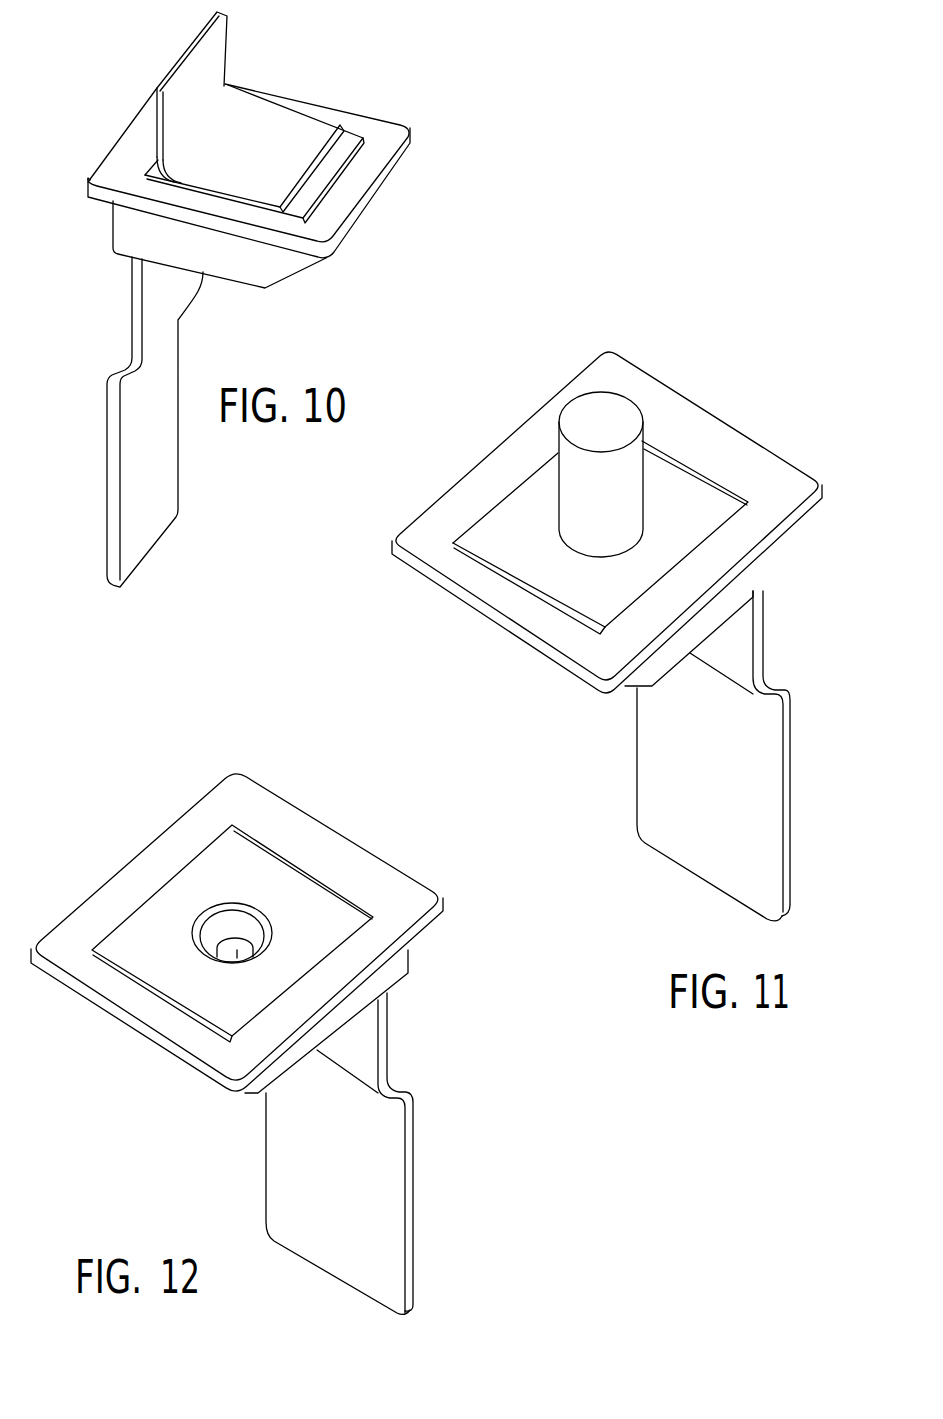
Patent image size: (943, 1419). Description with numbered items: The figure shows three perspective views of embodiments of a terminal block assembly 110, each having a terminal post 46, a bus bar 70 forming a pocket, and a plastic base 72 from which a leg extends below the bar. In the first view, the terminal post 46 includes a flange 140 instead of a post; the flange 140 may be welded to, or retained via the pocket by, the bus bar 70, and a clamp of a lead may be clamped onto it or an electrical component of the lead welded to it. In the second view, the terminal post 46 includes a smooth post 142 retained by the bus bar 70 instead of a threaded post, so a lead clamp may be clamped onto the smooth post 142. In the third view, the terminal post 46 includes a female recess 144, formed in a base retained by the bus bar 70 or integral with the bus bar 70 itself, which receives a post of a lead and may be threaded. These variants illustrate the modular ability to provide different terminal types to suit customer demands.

In FIG. 10, the terminal post 46 is at (290, 110).
In FIG. 11, the terminal post 46 is at (550, 435).
In FIG. 12, the terminal post 46 is at (192, 843).
In FIG. 10, the bus bar 70 is at (320, 172).
In FIG. 11, the bus bar 70 is at (703, 603).
In FIG. 12, the bus bar 70 is at (308, 978).
In FIG. 10, the mounting stem 72 is at (315, 290).
In FIG. 11, the mounting stem 72 is at (800, 542).
In FIG. 12, the mounting stem 72 is at (425, 950).
In FIG. 10, the terminal block assembly 110 is at (370, 228).
In FIG. 11, the terminal block assembly 110 is at (705, 397).
In FIG. 12, the terminal block assembly 110 is at (310, 783).
In FIG. 10, the flange 140 is at (185, 57).
In FIG. 11, the smooth post 142 is at (573, 488).
In FIG. 12, the female recess 144 is at (218, 932).